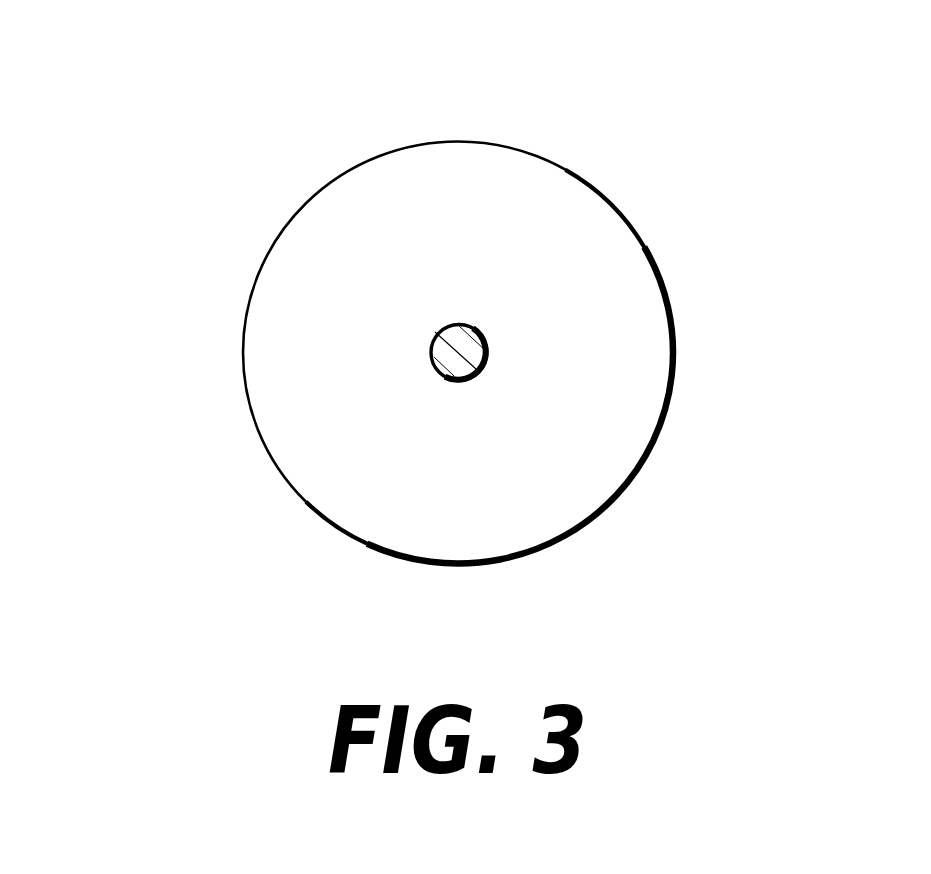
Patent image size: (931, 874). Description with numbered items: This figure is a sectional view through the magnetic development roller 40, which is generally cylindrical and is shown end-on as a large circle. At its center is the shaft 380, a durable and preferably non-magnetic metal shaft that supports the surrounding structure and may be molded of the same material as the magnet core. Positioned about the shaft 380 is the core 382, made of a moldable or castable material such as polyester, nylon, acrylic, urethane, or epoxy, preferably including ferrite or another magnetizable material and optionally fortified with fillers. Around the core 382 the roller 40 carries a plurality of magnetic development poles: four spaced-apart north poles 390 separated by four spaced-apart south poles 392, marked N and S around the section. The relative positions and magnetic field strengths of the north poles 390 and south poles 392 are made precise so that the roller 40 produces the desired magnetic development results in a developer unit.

The magnetic development roller 40 is at (272, 196).
The shaft 380 is at (430, 361).
The core 382 is at (257, 282).
The north poles 390 is at (449, 175).
The south poles 392 is at (580, 230).